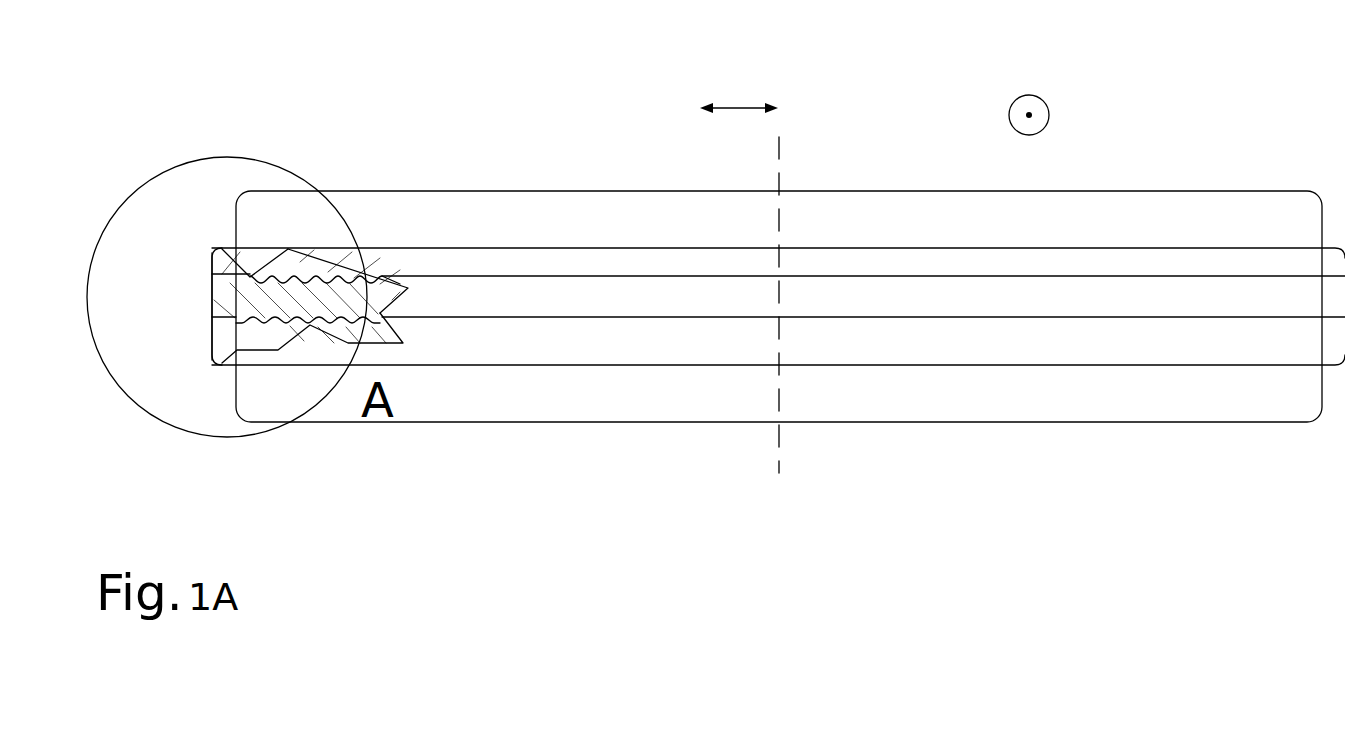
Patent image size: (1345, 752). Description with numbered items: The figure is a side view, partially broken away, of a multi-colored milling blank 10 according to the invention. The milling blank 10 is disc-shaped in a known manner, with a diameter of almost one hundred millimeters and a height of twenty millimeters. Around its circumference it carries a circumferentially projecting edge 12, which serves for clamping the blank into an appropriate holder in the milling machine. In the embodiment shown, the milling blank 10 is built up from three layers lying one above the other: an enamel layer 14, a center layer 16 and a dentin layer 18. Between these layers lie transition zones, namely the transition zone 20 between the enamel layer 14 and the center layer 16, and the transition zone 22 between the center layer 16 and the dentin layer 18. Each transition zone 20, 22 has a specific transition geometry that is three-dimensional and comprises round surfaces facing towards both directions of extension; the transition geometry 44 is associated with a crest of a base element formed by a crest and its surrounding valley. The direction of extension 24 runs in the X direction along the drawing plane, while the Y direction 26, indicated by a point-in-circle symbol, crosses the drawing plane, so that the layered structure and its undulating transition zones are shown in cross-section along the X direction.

The milling blank 10 is at (614, 98).
The circumferentially projecting edge 12 is at (448, 298).
The enamel layer 14 is at (1153, 262).
The center layer 16 is at (519, 297).
The dentin layer 18 is at (929, 342).
The transition zone 20 is at (255, 268).
The transition zone 22 is at (273, 322).
The direction of extension 24 is at (738, 106).
The Y direction 26 is at (1024, 100).
The transition geometry 44 is at (281, 282).